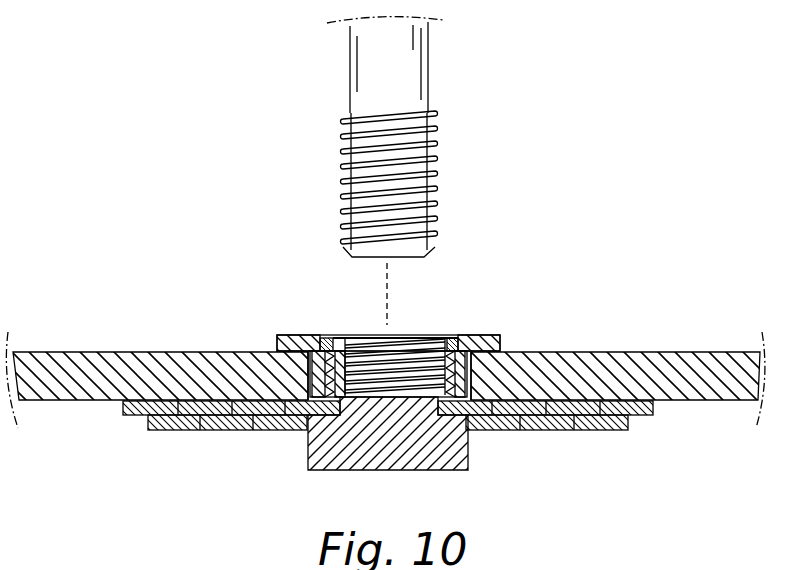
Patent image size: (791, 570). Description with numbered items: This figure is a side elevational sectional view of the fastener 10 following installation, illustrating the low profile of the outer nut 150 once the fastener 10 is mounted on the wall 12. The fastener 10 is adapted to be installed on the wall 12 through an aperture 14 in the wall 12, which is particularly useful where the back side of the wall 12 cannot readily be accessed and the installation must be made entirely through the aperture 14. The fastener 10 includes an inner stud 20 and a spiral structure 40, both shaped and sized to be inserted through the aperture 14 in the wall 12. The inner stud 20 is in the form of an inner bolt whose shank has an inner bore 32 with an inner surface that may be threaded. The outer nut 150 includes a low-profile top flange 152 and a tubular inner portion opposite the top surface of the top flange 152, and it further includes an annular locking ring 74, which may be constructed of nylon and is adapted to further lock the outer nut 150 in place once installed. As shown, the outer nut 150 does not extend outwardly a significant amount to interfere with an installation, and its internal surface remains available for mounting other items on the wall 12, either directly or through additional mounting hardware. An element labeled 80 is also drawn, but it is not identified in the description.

The fastener 10 is at (180, 194).
The wall 12 is at (658, 368).
The aperture 14 is at (477, 372).
The inner stud 20 is at (465, 448).
The inner bore 32 is at (405, 358).
The spiral structure 40 is at (193, 455).
The annular locking ring 74 is at (326, 337).
The bolt 80 is at (422, 68).
The outer nut 150 is at (290, 335).
The top flange 152 is at (277, 345).